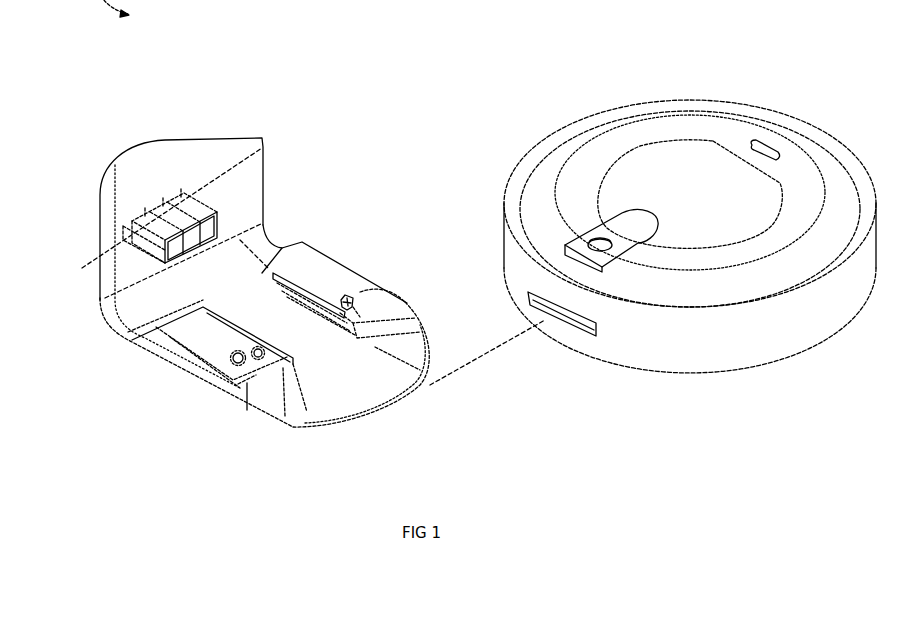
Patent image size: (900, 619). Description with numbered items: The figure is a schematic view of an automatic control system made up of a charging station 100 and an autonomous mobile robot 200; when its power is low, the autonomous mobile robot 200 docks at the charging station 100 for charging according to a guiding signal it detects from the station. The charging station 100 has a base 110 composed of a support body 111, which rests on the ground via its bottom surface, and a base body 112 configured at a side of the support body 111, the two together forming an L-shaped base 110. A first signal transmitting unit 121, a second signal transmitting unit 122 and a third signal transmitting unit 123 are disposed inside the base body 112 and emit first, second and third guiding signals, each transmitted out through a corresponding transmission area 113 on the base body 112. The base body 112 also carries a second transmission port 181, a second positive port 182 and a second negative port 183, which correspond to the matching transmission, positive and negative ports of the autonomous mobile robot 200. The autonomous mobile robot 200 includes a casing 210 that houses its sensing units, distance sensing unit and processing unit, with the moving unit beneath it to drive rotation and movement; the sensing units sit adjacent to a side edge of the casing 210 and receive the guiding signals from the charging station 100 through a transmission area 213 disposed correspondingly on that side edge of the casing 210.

The charging station 100 is at (52, 146).
The base 110 is at (352, 158).
The support body 111 is at (265, 232).
The base body 112 is at (265, 181).
The transmission area 113 is at (122, 258).
The first signal transmitting unit 121 is at (189, 188).
The second signal transmitting unit 122 is at (158, 203).
The third signal transmitting unit 123 is at (136, 216).
The second transmission port 181 is at (175, 363).
The second positive port 182 is at (232, 387).
The second negative port 183 is at (358, 297).
The autonomous mobile robot 200 is at (842, 97).
The casing 210 is at (600, 118).
The transmission area 213 is at (596, 338).